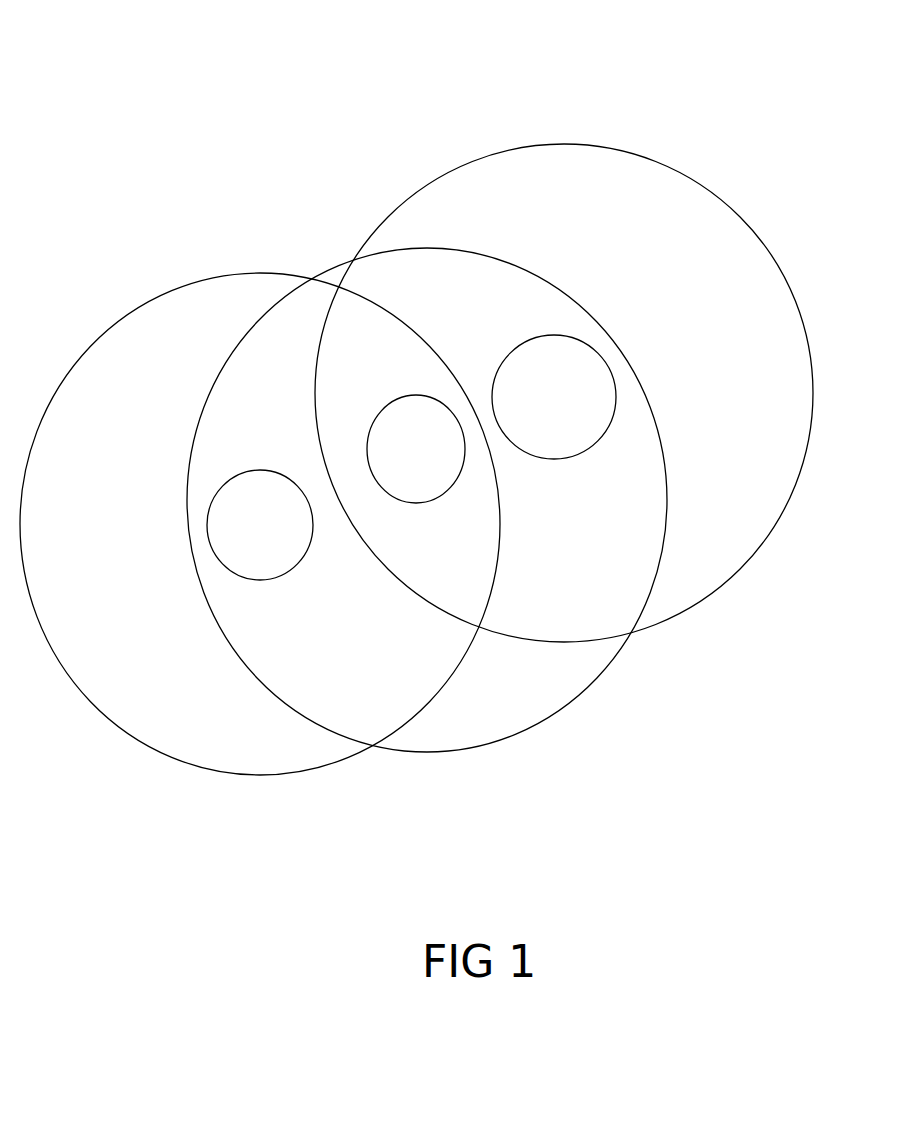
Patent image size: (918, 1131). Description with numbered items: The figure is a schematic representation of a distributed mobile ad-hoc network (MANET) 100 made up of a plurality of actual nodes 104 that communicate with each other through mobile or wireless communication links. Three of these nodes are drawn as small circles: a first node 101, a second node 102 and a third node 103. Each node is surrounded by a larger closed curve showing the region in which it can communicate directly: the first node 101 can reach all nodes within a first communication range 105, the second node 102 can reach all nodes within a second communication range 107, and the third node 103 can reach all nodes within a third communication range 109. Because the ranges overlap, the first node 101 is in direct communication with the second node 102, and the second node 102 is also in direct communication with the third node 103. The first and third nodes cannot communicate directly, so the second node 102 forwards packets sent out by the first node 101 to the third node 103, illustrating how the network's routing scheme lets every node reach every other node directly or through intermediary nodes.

The distributed mobile ad-hoc network (MANET) 100 is at (58, 26).
The first node 101 is at (270, 580).
The second node 102 is at (418, 504).
The third node 103 is at (525, 452).
The actual nodes 104 is at (285, 470).
The first communication range 105 is at (155, 297).
The second communication range 107 is at (540, 724).
The third communication range 109 is at (520, 147).